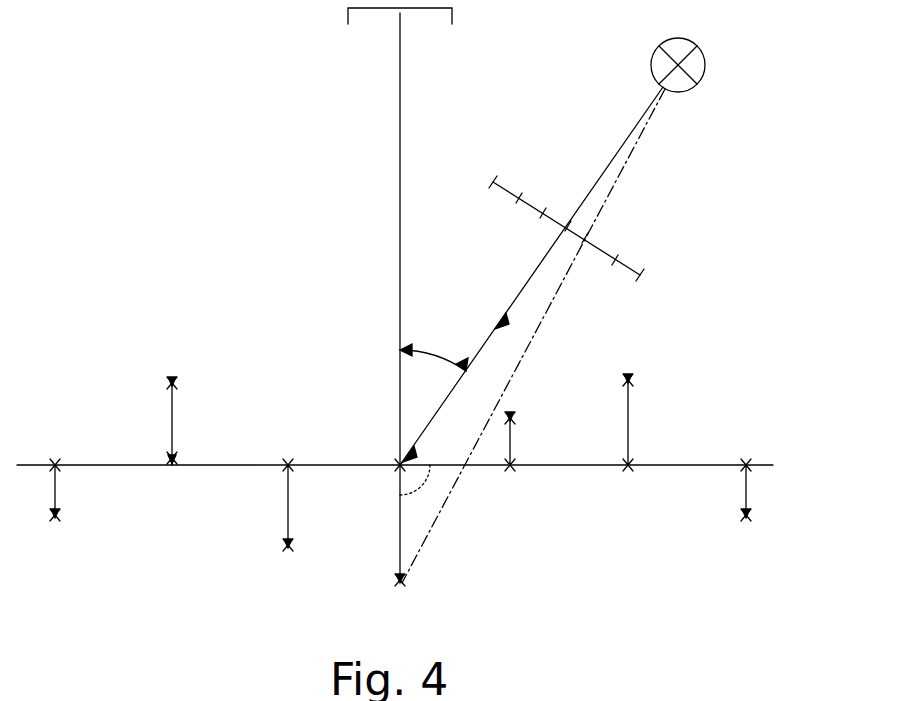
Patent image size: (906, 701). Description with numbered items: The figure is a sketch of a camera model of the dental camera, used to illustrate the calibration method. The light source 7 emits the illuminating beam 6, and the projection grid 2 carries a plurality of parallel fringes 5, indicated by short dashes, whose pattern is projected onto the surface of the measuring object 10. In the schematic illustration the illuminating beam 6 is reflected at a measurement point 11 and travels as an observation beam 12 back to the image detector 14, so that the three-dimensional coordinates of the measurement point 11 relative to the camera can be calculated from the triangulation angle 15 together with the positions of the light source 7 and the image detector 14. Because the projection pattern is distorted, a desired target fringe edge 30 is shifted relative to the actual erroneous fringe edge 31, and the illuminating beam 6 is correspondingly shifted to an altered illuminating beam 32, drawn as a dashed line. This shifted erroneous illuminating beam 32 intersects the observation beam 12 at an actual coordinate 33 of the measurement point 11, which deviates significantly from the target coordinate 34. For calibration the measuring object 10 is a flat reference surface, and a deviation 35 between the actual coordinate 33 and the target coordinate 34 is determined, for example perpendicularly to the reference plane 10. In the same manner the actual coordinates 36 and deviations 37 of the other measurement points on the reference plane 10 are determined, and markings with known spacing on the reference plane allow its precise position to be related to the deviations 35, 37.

The projection grid 2 is at (640, 275).
The parallel fringes 5 is at (540, 205).
The illuminating beam 6 is at (618, 155).
The light source 7 is at (705, 65).
The measuring object 10 is at (690, 465).
The measurement point 11 is at (398, 462).
The observation beam 12 is at (400, 268).
The image detector 14 is at (452, 15).
The triangulation angle 15 is at (452, 365).
The target fringe edge 30 is at (568, 226).
The erroneous fringe edge 31 is at (585, 238).
The altered illuminating beam 32 is at (552, 305).
The actual coordinate 33 is at (403, 588).
The target coordinate 34 is at (398, 468).
The deviation 35 is at (402, 522).
The actual coordinates 36 is at (288, 545).
The deviations 37 is at (288, 470).